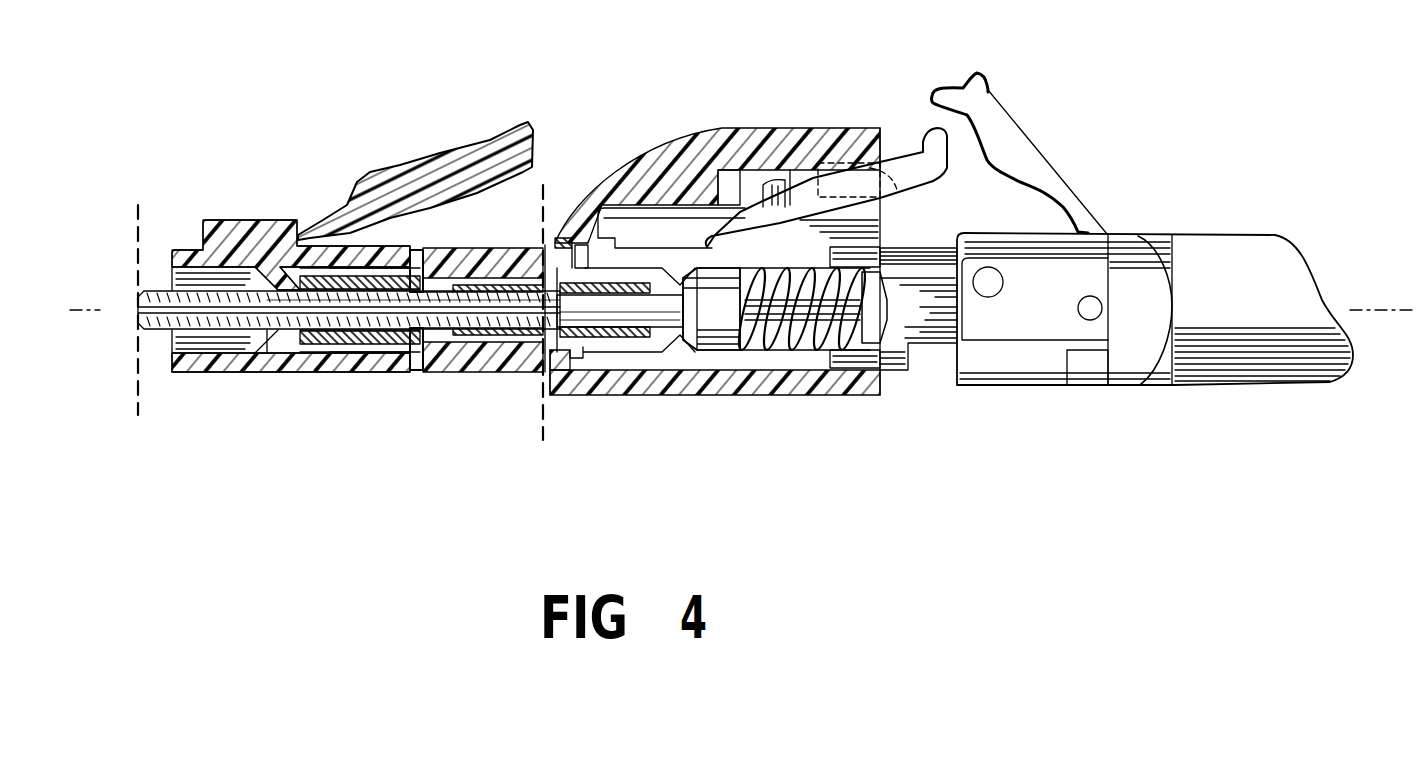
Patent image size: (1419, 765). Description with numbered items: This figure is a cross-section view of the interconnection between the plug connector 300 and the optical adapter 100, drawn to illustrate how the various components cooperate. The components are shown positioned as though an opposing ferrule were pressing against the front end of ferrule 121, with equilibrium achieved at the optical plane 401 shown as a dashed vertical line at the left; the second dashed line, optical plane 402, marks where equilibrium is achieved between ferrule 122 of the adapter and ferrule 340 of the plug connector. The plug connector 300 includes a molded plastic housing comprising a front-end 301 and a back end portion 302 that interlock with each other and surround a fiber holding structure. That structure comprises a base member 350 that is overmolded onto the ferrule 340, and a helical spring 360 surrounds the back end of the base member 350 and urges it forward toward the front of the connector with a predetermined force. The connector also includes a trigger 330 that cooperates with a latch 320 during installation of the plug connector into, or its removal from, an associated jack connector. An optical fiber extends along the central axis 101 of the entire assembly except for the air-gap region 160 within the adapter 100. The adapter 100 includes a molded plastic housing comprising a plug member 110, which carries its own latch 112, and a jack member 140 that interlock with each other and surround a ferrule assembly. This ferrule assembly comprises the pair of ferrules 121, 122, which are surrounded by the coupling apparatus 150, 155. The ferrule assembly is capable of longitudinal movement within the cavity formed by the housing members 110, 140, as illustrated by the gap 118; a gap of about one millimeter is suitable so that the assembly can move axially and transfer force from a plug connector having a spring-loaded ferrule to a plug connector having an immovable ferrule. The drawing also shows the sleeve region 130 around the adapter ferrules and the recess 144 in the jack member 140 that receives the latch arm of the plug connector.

The optical adapter 100 is at (349, 241).
The longitudinal axis 101 is at (100, 305).
The plug member 110 is at (233, 222).
The latch 112 is at (388, 182).
The gap 118 is at (410, 350).
The ferrule 121 is at (222, 332).
The ferrule 122 is at (443, 345).
The ferrule holder sleeve 130 is at (520, 345).
The jack member 140 is at (735, 140).
The latch recess 144 is at (905, 190).
The coupling apparatus 150 is at (260, 345).
The coupling apparatus 155 is at (382, 268).
The air-gap region 160 is at (340, 297).
The plug connector 300 is at (1143, 223).
The front-end 301 is at (680, 350).
The back end portion 302 is at (1120, 235).
The latch 320 is at (903, 160).
The trigger 330 is at (1040, 167).
The ferrule 340 is at (628, 318).
The base member 350 is at (722, 342).
The helical spring 360 is at (803, 347).
The optical plane 401 is at (143, 212).
The optical plane 402 is at (547, 196).